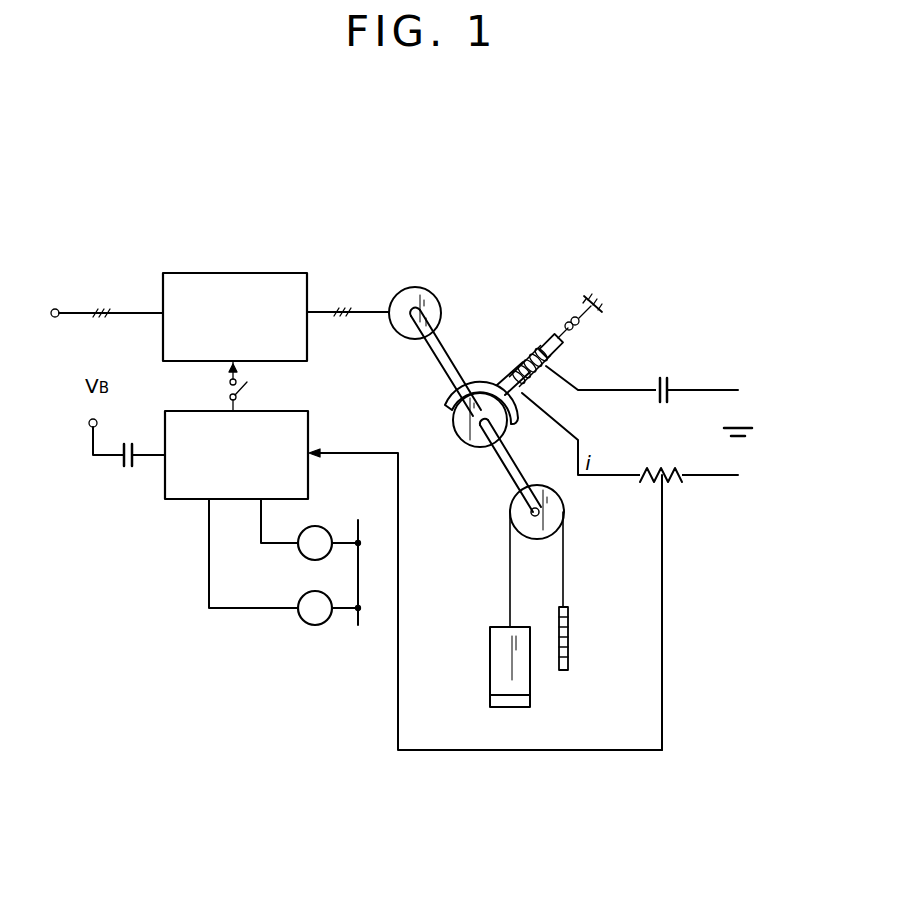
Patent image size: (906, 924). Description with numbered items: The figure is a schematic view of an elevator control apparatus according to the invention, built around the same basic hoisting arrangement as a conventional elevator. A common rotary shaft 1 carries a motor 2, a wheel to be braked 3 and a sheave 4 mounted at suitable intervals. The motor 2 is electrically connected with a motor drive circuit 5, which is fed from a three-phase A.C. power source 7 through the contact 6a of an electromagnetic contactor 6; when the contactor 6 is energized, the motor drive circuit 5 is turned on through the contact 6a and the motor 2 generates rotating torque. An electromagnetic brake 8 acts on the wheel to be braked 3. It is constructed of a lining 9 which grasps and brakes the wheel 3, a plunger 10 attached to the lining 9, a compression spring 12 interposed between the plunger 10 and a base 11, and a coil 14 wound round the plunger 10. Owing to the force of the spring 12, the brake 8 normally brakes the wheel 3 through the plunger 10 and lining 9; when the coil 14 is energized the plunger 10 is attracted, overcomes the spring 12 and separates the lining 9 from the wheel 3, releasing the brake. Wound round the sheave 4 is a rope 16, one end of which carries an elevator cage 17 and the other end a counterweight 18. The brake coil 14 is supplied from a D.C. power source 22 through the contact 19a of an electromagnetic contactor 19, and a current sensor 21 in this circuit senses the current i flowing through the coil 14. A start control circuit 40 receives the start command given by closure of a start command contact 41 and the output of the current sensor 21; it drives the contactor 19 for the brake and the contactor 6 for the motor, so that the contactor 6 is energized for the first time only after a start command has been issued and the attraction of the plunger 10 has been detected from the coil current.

The common rotary shaft 1 is at (441, 376).
The motor 2 is at (421, 288).
The wheel to be braked 3 is at (460, 441).
The sheave 4 is at (537, 540).
The motor drive circuit 5 is at (232, 273).
The electromagnetic contactor 6 is at (316, 626).
The contact of the electromagnetic contactor 6a is at (249, 388).
The three-phase A.C. power source 7 is at (56, 309).
The electromagnetic brake 8 is at (470, 350).
The lining 9 is at (514, 424).
The plunger 10 is at (557, 352).
The base 11 is at (588, 300).
The compression spring 12 is at (580, 326).
The coil 14 is at (530, 354).
The rope 16 is at (566, 560).
The elevator cage 17 is at (490, 665).
The counterweight 18 is at (570, 630).
The electromagnetic contactor 19 is at (322, 527).
The contact of the electromagnetic contactor 19a is at (667, 376).
The current sensor 21 is at (668, 468).
The D.C. power source 22 is at (748, 424).
The start control circuit 40 is at (312, 432).
The start command contact 41 is at (130, 441).